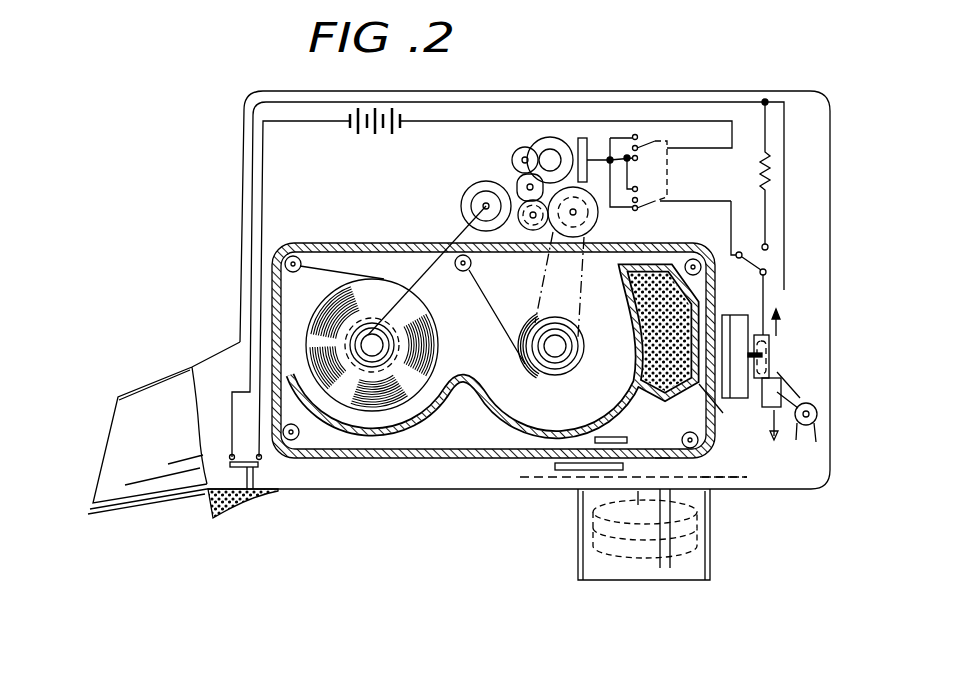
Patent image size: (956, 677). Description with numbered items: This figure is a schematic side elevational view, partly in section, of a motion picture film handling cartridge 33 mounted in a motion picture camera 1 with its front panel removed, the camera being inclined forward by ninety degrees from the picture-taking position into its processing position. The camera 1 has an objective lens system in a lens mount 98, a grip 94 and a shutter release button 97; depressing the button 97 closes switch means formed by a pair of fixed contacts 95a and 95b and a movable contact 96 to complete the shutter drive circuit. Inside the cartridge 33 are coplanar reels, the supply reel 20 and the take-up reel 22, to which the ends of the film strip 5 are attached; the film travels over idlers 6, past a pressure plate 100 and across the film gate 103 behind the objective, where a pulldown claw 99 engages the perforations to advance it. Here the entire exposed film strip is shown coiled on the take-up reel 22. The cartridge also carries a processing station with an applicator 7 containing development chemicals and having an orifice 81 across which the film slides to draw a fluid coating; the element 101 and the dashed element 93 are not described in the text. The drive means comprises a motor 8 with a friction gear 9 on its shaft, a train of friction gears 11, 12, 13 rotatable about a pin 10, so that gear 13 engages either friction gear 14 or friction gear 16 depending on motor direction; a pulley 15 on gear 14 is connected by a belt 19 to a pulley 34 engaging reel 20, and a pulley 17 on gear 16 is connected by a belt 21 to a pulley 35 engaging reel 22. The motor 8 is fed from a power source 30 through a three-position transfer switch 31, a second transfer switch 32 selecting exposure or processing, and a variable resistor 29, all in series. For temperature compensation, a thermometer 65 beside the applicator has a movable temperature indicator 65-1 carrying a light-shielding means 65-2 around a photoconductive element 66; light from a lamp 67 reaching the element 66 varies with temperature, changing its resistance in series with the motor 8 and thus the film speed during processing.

The projector 1 is at (795, 485).
The exposed film strip 5 is at (494, 316).
The idlers 6 is at (293, 256).
The applicator 7 is at (654, 320).
The motor 8 is at (559, 137).
The friction gear 9 is at (552, 149).
The pin 10 is at (530, 146).
The friction gear 11 is at (520, 148).
The friction gear 12 is at (520, 175).
The friction gear 13 is at (520, 207).
The friction gear 14 is at (590, 223).
The pulley 15 is at (572, 216).
The friction gear 16 is at (464, 198).
The pulley 17 is at (475, 210).
The belt 19 is at (587, 280).
The supply reel 20 is at (562, 352).
The belt 21 is at (449, 280).
The take-up reel 22 is at (383, 357).
The variable resistor 29 is at (770, 170).
The power source 30 is at (377, 138).
The transfer switch 31 is at (668, 186).
The transfer switch 32 is at (770, 258).
The motion picture film handling cartridge 33 is at (370, 243).
The pulley 34 is at (546, 361).
The pulley 35 is at (388, 344).
The thermometer 65 is at (739, 315).
The temperature indicator 65-1 is at (757, 352).
The light-shielding means 65-2 is at (769, 355).
The photoconductive element 66 is at (756, 400).
The lamp 67 is at (790, 426).
The orifice 81 is at (723, 413).
The guide slot 93 is at (730, 480).
The grip 94 is at (172, 482).
The fixed contact 95a is at (231, 455).
The fixed contact 95b is at (263, 459).
The movable contact 96 is at (259, 470).
The shutter release button 97 is at (222, 508).
The lens mount 98 is at (586, 553).
The pulldown claw 99 is at (568, 472).
The pressure plate 100 is at (608, 437).
The plate 101 is at (623, 458).
The film gate 103 is at (660, 458).